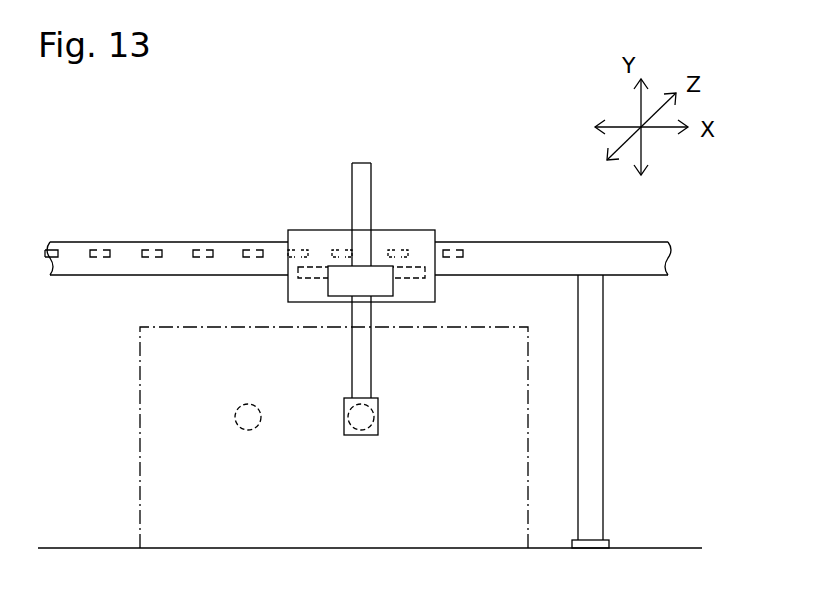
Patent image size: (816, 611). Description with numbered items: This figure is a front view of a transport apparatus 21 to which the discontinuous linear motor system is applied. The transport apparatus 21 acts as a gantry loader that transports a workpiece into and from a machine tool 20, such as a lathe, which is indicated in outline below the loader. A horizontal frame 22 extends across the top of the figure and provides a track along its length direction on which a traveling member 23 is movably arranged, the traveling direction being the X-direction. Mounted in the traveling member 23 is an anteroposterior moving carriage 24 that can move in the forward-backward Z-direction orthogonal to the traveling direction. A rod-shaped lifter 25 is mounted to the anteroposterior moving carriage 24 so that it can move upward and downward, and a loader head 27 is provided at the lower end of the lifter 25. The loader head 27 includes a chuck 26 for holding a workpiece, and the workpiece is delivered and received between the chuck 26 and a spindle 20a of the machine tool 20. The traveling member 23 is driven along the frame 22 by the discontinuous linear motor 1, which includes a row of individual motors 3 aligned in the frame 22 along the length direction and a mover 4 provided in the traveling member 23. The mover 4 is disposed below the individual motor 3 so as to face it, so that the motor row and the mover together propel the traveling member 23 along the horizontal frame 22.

The discontinuous linear motor 1 is at (100, 243).
The individual motor 3 is at (297, 245).
The mover 4 is at (310, 275).
The machine tool 20 is at (138, 454).
The spindle 20a is at (240, 430).
The transport apparatus 21 is at (197, 193).
The horizontal frame 22 is at (527, 248).
The traveling member 23 is at (402, 230).
The anteroposterior moving carriage 24 is at (345, 275).
The lifter 25 is at (360, 367).
The chuck 26 is at (363, 435).
The loader head 27 is at (378, 403).